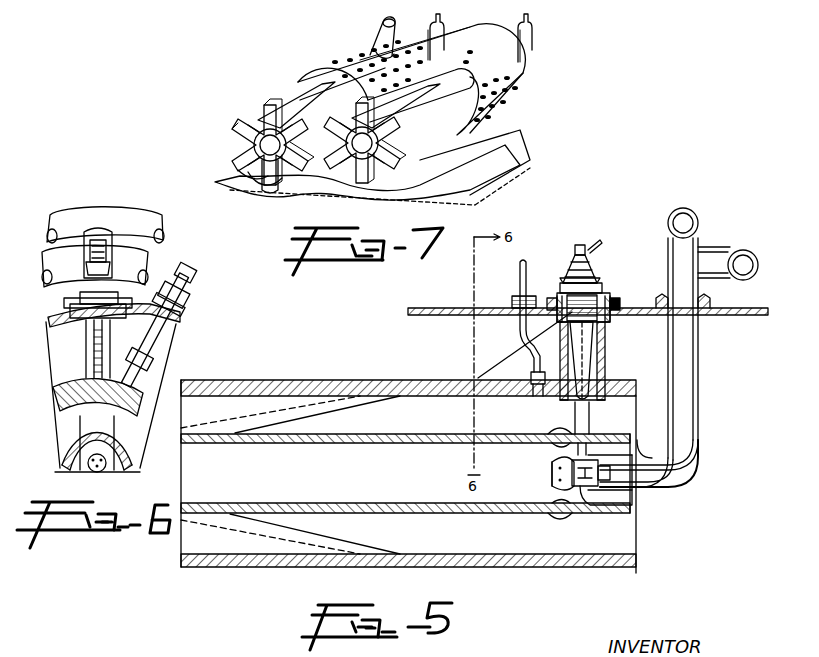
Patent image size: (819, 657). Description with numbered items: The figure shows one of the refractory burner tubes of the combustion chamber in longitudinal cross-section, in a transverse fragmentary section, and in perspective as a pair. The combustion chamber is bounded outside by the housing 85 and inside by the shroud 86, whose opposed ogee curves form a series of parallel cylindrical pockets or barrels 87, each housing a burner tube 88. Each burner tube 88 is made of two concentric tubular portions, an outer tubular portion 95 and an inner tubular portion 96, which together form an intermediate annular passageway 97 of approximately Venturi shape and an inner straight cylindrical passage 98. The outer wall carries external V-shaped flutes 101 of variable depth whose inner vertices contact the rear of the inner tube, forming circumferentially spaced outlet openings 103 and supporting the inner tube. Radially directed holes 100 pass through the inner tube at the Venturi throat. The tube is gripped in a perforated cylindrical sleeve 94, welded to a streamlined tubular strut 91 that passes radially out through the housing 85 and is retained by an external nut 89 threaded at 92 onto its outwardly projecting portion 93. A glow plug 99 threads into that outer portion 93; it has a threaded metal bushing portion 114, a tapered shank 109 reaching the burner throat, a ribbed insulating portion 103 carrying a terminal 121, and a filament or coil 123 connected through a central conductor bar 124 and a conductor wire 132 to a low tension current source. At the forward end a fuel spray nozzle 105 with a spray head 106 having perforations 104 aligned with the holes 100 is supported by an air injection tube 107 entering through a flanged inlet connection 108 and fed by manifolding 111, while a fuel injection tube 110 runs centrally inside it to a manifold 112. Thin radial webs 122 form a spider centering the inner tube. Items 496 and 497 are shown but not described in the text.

In FIG. 5, the housing 85 is at (434, 306).
In FIG. 6, the housing 85 is at (56, 313).
In FIG. 7, the shroud 86 is at (413, 190).
In FIG. 5, the pockets or barrels 87 is at (458, 340).
In FIG. 7, the pockets or barrels 87 is at (266, 190).
In FIG. 5, the burner tube 88 is at (326, 480).
In FIG. 7, the burner tube 88 is at (300, 82).
In FIG. 5, the external nut 89 is at (621, 302).
In FIG. 6, the external nut 89 is at (66, 298).
In FIG. 5, the tubular strut 91 is at (532, 345).
In FIG. 6, the tubular strut 91 is at (92, 348).
In FIG. 7, the tubular strut 91 is at (368, 33).
In FIG. 5, the threads 92 is at (604, 290).
In FIG. 5, the outwardly projecting portion 93 is at (560, 298).
In FIG. 5, the perforated cylindrical sleeve 94 is at (420, 382).
In FIG. 6, the perforated cylindrical sleeve 94 is at (62, 384).
In FIG. 7, the perforated cylindrical sleeve 94 is at (340, 70).
In FIG. 5, the outer tubular portion 95 is at (336, 382).
In FIG. 6, the outer tubular portion 95 is at (52, 398).
In FIG. 7, the outer tubular portion 95 is at (270, 102).
In FIG. 5, the inner tubular portion 96 is at (388, 394).
In FIG. 6, the inner tubular portion 96 is at (68, 440).
In FIG. 7, the inner tubular portion 96 is at (275, 148).
In FIG. 5, the intermediate annular passageway 97 is at (418, 394).
In FIG. 7, the intermediate annular passageway 97 is at (373, 170).
In FIG. 5, the inner straight cylindrical passage 98 is at (360, 444).
In FIG. 7, the inner straight cylindrical passage 98 is at (250, 176).
In FIG. 5, the glow plug 99 is at (568, 260).
In FIG. 5, the radially directed holes 100 is at (565, 512).
In FIG. 5, the V-shaped flutes 101 is at (240, 420).
In FIG. 7, the V-shaped flutes 101 is at (240, 121).
In FIG. 5, the outlet openings / ribbed insulating portion 103 is at (598, 270).
In FIG. 7, the outlet openings / ribbed insulating portion 103 is at (250, 141).
In FIG. 5, the perforations 104 is at (556, 482).
In FIG. 5, the fuel spray nozzle 105 is at (598, 505).
In FIG. 5, the spray head 106 is at (552, 466).
In FIG. 6, the spray head 106 is at (92, 470).
In FIG. 5, the air injection tube 107 is at (652, 457).
In FIG. 5, the flanged inlet connection 108 is at (708, 301).
In FIG. 5, the tapered shank 109 is at (605, 367).
In FIG. 5, the fuel injection tube 110 is at (640, 490).
In FIG. 5, the manifolding 111 is at (746, 250).
In FIG. 6, the manifolding 111 is at (136, 265).
In FIG. 5, the manifold 112 is at (668, 226).
In FIG. 6, the manifold 112 is at (108, 224).
In FIG. 5, the threaded metal bushing portion 114 is at (565, 272).
In FIG. 5, the terminal 121 is at (585, 245).
In FIG. 5, the webs 122 is at (610, 448).
In FIG. 5, the filament or coil 123 is at (560, 396).
In FIG. 5, the central conductor bar 124 is at (606, 336).
In FIG. 5, the conductor wire 132 is at (596, 246).
In FIG. 5, the bolt 496 is at (514, 300).
In FIG. 6, the bolt 496 is at (176, 298).
In FIG. 5, the lead connector 497 is at (510, 398).
In FIG. 6, the lead connector 497 is at (118, 398).